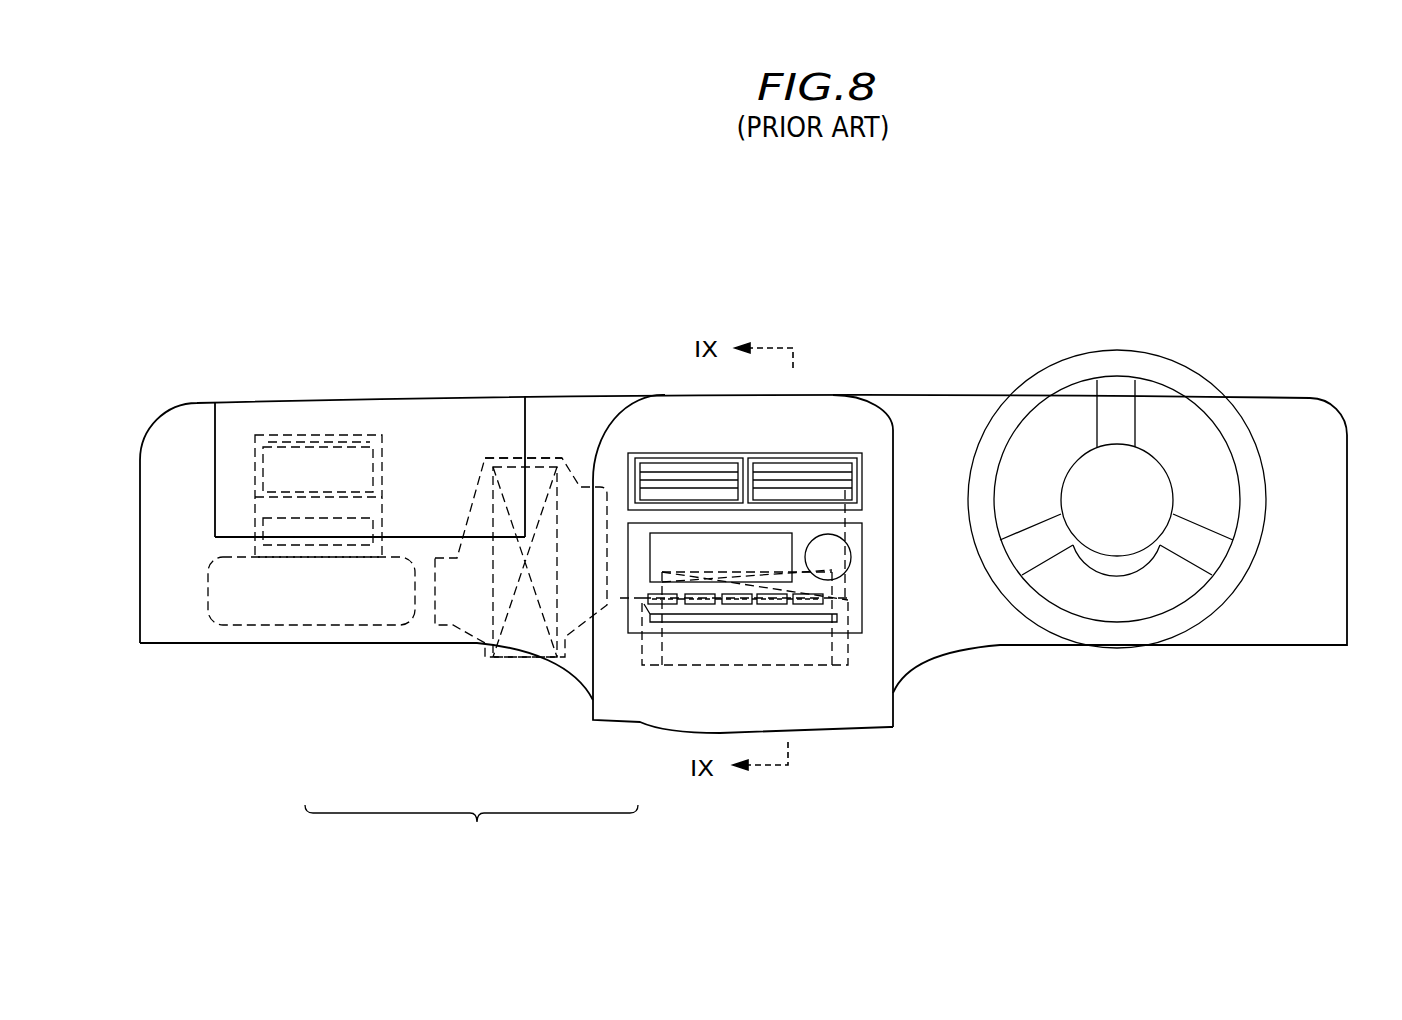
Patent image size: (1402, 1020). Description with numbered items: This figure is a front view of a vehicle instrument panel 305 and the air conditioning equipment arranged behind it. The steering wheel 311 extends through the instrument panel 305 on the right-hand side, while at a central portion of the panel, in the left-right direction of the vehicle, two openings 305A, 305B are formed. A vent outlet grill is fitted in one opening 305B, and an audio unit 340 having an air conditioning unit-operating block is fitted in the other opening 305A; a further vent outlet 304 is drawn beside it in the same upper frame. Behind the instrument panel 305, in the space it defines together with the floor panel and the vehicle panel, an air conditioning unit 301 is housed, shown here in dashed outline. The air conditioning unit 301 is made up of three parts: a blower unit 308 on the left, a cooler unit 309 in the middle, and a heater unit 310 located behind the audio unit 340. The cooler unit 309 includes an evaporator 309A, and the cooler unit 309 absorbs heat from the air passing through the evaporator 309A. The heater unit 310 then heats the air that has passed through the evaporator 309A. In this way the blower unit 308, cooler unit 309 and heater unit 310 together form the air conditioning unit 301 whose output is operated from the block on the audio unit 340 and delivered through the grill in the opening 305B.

The air conditioning unit 301 is at (471, 833).
The air outlet 304 is at (688, 480).
The instrument panel 305 is at (1290, 400).
The opening 305A is at (843, 605).
The opening 305B is at (850, 475).
The blower unit 308 is at (312, 610).
The cooler unit 309 is at (505, 657).
The evaporator 309A is at (546, 456).
The heater unit 310 is at (693, 665).
The steering wheel 311 is at (1085, 358).
The audio unit 340 is at (802, 630).